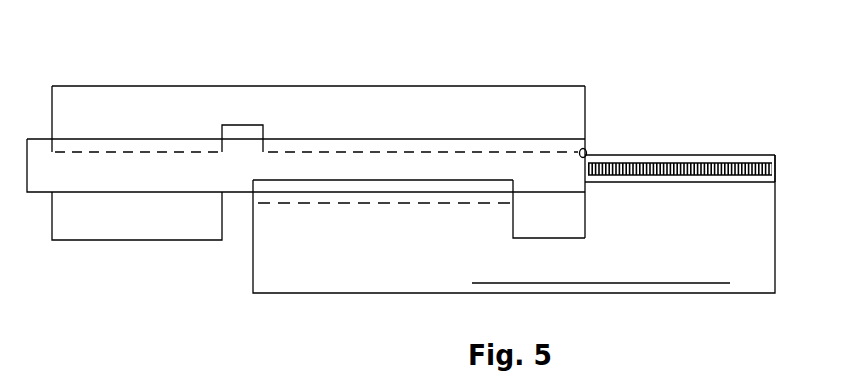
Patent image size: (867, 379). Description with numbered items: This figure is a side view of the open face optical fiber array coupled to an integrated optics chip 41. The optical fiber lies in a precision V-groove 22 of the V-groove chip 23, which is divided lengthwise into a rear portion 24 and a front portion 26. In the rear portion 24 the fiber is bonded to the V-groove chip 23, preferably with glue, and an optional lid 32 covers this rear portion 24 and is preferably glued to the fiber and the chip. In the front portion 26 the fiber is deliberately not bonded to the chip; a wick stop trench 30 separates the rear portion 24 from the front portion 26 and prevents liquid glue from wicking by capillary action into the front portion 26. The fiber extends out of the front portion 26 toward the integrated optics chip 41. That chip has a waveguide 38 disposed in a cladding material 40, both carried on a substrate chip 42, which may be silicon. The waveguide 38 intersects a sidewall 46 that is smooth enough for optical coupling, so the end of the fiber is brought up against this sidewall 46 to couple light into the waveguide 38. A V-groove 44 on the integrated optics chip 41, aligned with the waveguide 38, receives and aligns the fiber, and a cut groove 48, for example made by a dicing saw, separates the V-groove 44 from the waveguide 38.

The V-groove 22 is at (548, 157).
The V-groove chip 23 is at (508, 124).
The rear portion 24 is at (240, 86).
The front portion 26 is at (585, 87).
The wick stop trench 30 is at (247, 125).
The lid 32 is at (189, 227).
The waveguide 38 is at (682, 163).
The cladding material 40 is at (757, 155).
The integrated optics chip 41 is at (613, 270).
The substrate chip 42 is at (775, 255).
The V-groove 44 is at (355, 204).
The sidewall 46 is at (587, 150).
The cut groove 48 is at (569, 227).